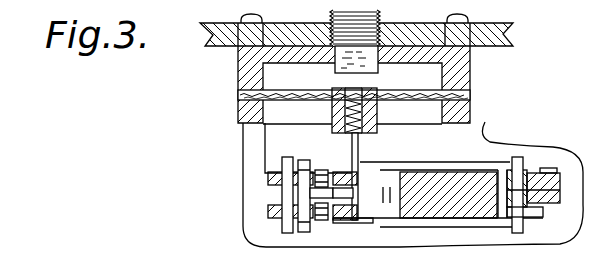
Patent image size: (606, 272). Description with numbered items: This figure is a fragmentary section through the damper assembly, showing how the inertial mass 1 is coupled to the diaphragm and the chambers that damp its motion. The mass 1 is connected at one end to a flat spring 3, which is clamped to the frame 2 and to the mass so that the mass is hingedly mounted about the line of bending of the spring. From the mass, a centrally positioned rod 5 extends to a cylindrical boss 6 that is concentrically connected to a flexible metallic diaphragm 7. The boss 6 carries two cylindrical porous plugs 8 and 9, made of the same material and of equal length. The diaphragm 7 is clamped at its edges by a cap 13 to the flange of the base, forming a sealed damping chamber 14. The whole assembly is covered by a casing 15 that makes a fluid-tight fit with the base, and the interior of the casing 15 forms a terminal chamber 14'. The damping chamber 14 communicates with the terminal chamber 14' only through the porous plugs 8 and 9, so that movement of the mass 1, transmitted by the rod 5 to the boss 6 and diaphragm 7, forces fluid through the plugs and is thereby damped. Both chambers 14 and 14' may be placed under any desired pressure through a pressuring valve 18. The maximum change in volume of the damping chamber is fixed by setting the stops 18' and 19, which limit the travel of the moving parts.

The mass 1 is at (460, 182).
The frame 2 is at (264, 213).
The flat spring 3 is at (568, 190).
The rod 5 is at (360, 152).
The cylindrical boss 6 is at (377, 129).
The flexible metallic diaphragm 7 is at (275, 87).
The porous plug 8 is at (332, 113).
The porous plug 9 is at (377, 113).
The cap 13 is at (472, 62).
The damping chamber 14 is at (270, 68).
The terminal chamber 14' is at (413, 162).
The casing 15 is at (502, 33).
The pressuring valve 18 is at (328, 38).
The stop 18' is at (311, 157).
The stop 19 is at (318, 221).